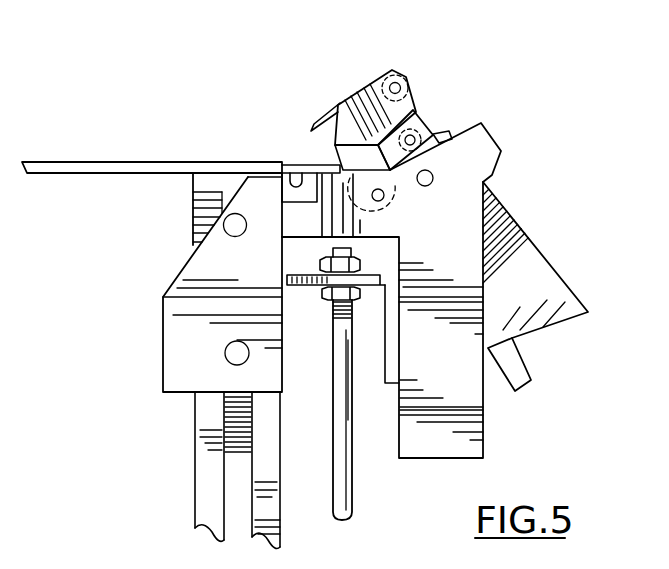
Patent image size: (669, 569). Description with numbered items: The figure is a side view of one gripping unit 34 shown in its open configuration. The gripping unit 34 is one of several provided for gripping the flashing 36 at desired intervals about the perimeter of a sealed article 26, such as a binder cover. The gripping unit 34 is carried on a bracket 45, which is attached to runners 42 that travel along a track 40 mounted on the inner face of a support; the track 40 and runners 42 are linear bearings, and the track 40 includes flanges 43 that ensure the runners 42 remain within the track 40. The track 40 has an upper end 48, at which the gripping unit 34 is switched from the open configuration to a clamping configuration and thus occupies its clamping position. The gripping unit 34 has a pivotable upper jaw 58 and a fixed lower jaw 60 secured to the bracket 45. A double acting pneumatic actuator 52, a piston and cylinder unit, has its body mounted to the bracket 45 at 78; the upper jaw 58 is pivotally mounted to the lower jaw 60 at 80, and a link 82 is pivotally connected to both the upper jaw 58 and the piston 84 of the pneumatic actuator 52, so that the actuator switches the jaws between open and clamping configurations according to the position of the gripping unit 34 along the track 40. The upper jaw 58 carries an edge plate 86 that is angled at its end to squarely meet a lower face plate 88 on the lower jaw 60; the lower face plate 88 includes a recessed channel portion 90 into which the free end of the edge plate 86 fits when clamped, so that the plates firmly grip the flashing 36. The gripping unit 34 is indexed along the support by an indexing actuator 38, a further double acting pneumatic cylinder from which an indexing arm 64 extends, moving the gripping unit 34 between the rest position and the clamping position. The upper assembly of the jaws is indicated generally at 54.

The sealed article 26 is at (100, 162).
The gripping unit 34 is at (524, 218).
The flashing 36 is at (284, 163).
The indexing actuator 38 is at (372, 503).
The track 40 is at (218, 455).
The runner 42 is at (243, 235).
The flange 43 is at (212, 512).
The bracket 45 is at (162, 317).
The upper end 48 is at (163, 195).
The pneumatic actuator 52 is at (563, 278).
The clamp assembly 54 is at (342, 84).
The upper jaw 58 is at (370, 123).
The lower jaw 60 is at (306, 170).
The indexing arm 64 is at (356, 458).
The mounting point of pneumatic actuator 78 is at (433, 176).
The pivot of upper jaw 80 is at (383, 199).
The link 82 is at (415, 110).
The piston 84 is at (434, 128).
The edge plate 86 is at (330, 110).
The lower face plate 88 is at (281, 186).
The recessed channel portion 90 is at (295, 172).